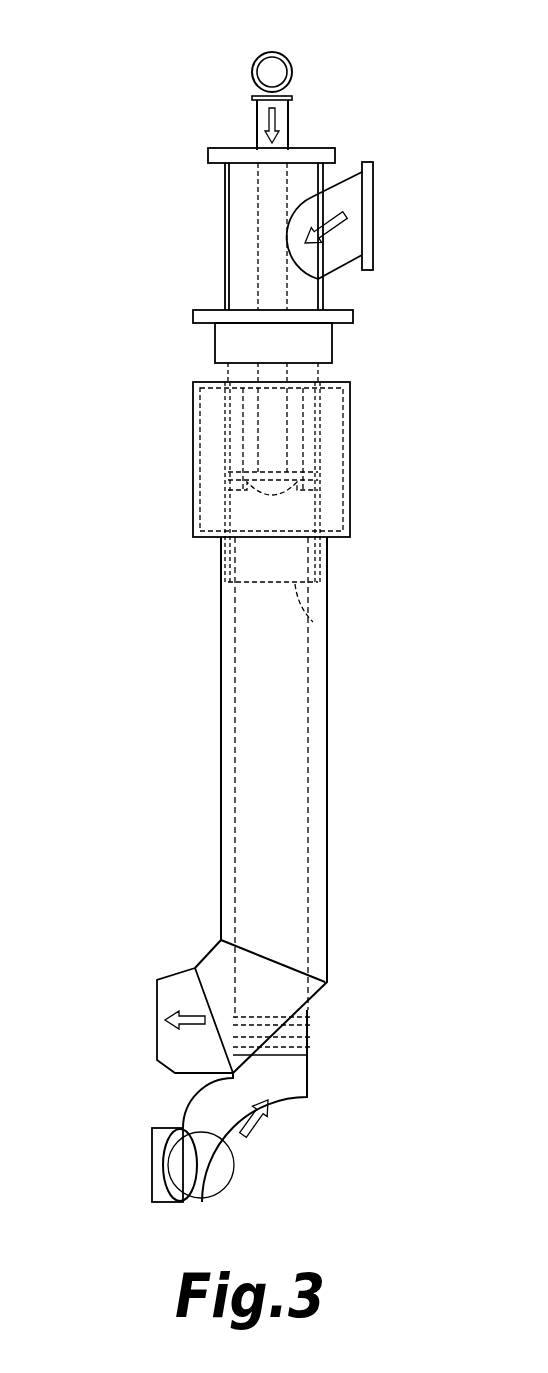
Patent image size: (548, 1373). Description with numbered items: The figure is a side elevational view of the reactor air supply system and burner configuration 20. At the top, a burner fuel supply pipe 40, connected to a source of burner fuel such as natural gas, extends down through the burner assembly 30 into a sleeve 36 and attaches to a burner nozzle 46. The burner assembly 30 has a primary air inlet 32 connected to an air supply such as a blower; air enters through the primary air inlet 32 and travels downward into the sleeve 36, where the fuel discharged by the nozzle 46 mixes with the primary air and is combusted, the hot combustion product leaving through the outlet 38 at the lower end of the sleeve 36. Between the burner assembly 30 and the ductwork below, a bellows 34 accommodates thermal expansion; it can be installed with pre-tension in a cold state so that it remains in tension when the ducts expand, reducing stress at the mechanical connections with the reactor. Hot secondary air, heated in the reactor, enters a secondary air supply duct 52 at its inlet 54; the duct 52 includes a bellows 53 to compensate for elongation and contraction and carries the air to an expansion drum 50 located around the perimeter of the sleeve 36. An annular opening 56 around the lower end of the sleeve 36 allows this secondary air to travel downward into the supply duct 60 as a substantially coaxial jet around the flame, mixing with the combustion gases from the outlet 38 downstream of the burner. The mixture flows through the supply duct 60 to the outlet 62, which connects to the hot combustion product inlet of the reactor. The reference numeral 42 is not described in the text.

The reactor air supply system and burner configuration 20 is at (108, 306).
The burner assembly 30 is at (225, 258).
The primary air inlet 32 is at (373, 228).
The bellows 34 is at (215, 350).
The sleeve 36 is at (330, 522).
The outlet 38 is at (327, 625).
The burner fuel supply pipe 40 is at (251, 63).
The outlet opening 42 is at (282, 68).
The burner nozzle 46 is at (318, 490).
The expansion drum 50 is at (207, 430).
The secondary air supply duct 52 is at (293, 1095).
The bellows 53 is at (313, 1030).
The inlet 54 is at (152, 1180).
The annular opening 56 is at (330, 565).
The supply duct 60 is at (330, 750).
The outlet 62 is at (157, 1047).